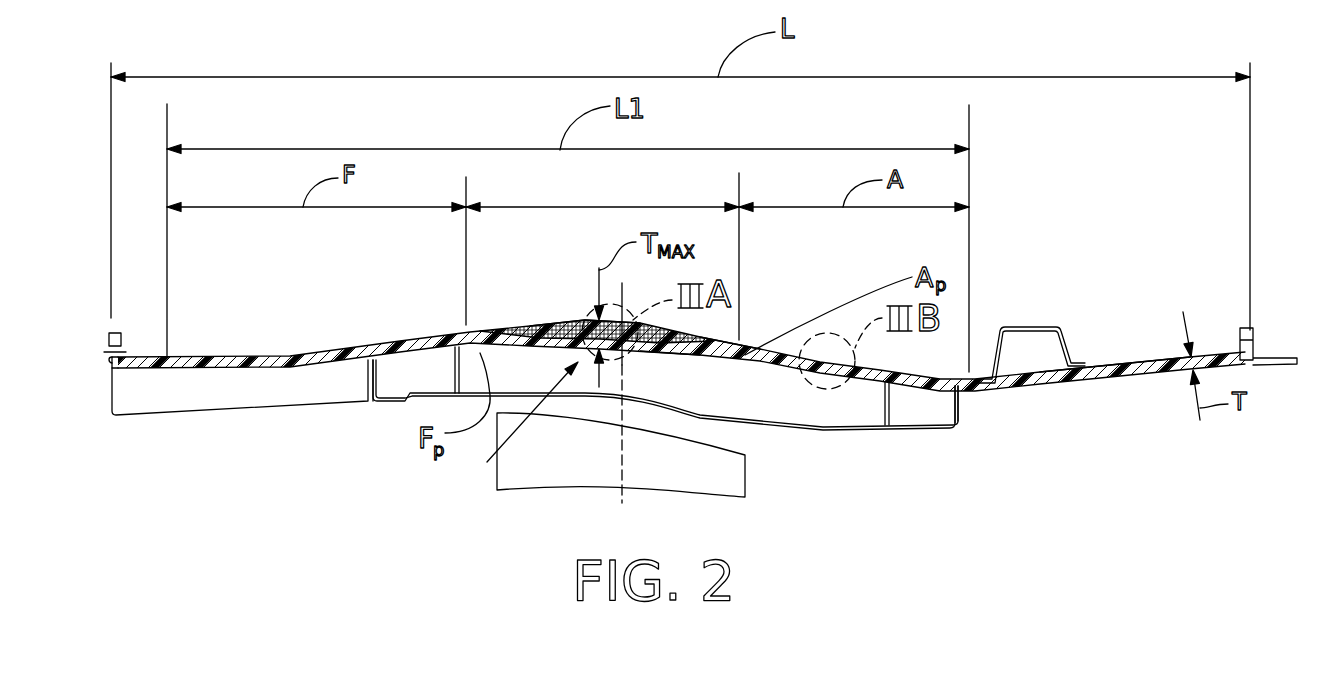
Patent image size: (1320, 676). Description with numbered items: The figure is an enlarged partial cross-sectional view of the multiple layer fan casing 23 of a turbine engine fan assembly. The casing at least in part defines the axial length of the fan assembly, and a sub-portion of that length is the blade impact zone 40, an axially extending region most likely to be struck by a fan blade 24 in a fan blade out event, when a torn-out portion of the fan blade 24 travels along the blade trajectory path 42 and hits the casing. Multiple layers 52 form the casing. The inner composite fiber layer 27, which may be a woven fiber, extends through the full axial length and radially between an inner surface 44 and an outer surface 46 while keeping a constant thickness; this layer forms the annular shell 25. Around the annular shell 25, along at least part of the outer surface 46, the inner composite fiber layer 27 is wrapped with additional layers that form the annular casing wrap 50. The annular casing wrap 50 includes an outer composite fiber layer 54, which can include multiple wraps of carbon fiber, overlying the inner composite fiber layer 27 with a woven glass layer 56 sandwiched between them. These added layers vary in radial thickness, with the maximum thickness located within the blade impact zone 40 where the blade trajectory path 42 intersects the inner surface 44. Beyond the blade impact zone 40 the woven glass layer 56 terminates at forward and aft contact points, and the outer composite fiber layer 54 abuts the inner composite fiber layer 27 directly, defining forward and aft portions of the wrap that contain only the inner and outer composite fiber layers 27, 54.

The multiple layer fan casing 23 is at (985, 337).
The fan blade 24 is at (738, 480).
The annular shell 25 is at (1109, 357).
The inner composite fiber layer 27 is at (972, 387).
The blade impact zone 40 is at (625, 207).
The blade trajectory path 42 is at (513, 430).
The inner surface 44 is at (452, 350).
The outer surface 46 is at (430, 337).
The annular casing wrap 50 is at (742, 337).
The multiple layers 52 is at (672, 358).
The outer composite fiber layer 54 is at (566, 322).
The woven glass layer 56 is at (548, 329).